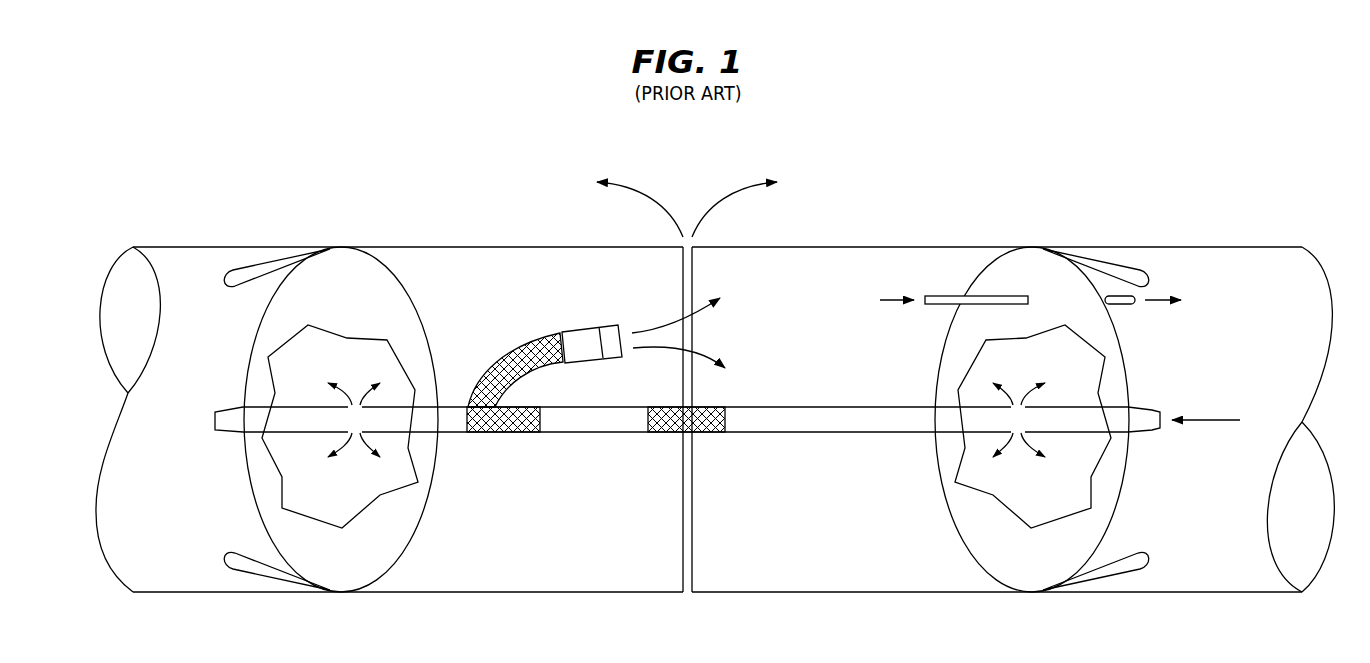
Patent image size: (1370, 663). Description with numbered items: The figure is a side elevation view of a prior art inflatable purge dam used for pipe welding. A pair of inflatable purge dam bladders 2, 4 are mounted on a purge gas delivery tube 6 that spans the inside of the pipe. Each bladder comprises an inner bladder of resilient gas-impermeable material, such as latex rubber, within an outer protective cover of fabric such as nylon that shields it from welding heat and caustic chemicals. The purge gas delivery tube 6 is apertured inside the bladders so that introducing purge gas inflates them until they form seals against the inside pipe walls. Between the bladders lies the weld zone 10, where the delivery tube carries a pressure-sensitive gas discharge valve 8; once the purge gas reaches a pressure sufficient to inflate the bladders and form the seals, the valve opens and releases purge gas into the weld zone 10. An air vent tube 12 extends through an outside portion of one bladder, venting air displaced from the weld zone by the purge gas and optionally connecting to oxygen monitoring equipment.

The inflatable purge dam bladder 2 is at (362, 275).
The inflatable purge dam bladder 4 is at (999, 277).
The purge gas delivery tube 6 is at (800, 418).
The pressure-sensitive gas discharge valve 8 is at (583, 338).
The weld zone 10 is at (580, 517).
The air vent tube 12 is at (936, 304).